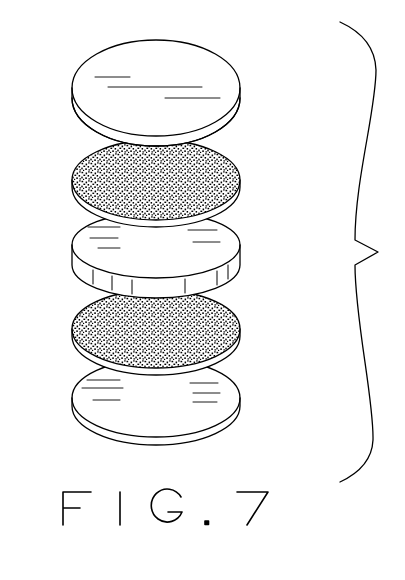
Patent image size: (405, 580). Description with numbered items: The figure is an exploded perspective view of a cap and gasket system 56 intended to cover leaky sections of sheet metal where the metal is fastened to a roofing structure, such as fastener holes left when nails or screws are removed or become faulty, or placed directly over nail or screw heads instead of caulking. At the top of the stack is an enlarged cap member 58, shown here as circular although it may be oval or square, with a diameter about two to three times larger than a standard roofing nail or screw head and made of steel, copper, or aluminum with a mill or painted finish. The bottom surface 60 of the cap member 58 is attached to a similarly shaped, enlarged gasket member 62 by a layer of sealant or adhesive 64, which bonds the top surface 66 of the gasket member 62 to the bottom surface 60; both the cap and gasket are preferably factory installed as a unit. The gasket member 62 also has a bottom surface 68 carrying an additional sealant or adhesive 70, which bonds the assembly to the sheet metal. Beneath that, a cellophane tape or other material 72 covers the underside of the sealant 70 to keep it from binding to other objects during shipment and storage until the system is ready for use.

The cap and gasket system 56 is at (270, 147).
The cap member 58 is at (205, 77).
The bottom surface 60 is at (240, 112).
The gasket member 62 is at (243, 242).
The sealant or adhesive 64 is at (221, 173).
The top surface 66 is at (90, 225).
The bottom surface 68 is at (82, 270).
The sealant or adhesive 70 is at (218, 331).
The cellophane tape 72 is at (218, 389).